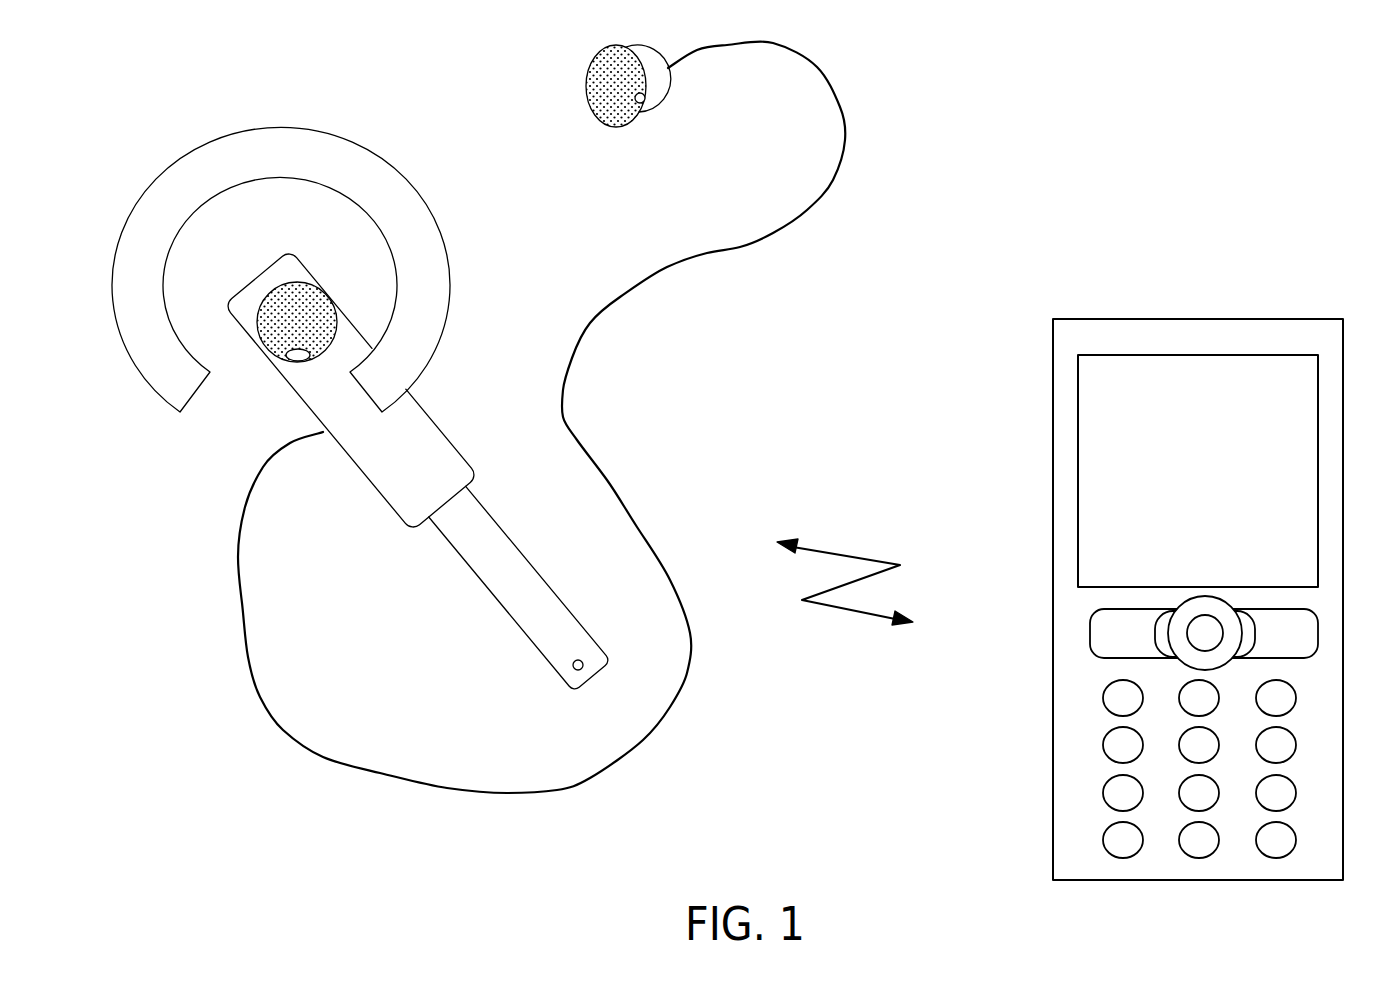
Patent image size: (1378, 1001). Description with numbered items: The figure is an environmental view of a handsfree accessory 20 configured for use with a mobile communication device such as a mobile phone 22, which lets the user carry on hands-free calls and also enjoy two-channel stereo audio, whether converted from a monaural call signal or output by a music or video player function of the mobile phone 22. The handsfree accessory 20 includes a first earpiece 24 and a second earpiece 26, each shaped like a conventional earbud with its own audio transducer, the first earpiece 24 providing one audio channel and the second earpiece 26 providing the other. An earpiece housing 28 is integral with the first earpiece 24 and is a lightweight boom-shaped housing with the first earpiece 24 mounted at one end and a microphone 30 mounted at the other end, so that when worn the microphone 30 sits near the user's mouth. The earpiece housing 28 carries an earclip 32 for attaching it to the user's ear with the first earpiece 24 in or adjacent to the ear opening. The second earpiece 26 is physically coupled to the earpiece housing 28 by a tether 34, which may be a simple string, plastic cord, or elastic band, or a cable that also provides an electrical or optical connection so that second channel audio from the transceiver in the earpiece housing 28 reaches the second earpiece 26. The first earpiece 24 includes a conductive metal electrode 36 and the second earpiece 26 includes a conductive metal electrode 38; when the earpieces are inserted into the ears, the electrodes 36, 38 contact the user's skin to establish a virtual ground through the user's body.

The handsfree accessory 20 is at (181, 547).
The mobile phone 22 is at (1198, 318).
The first earpiece 24 is at (280, 283).
The second earpiece 26 is at (603, 53).
The earpiece housing 28 is at (448, 375).
The microphone 30 is at (567, 672).
The earclip 32 is at (250, 132).
The tether 34 is at (623, 482).
The conductive metal electrode 36 is at (302, 358).
The conductive metal electrode 38 is at (643, 104).